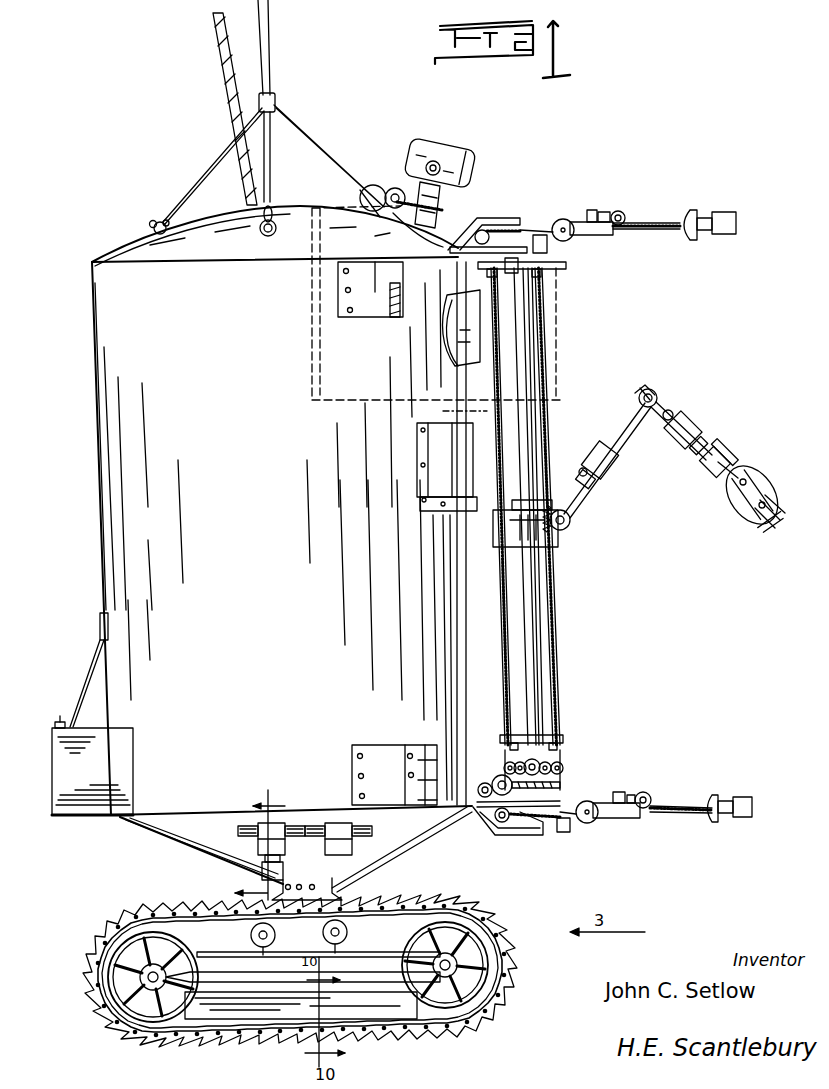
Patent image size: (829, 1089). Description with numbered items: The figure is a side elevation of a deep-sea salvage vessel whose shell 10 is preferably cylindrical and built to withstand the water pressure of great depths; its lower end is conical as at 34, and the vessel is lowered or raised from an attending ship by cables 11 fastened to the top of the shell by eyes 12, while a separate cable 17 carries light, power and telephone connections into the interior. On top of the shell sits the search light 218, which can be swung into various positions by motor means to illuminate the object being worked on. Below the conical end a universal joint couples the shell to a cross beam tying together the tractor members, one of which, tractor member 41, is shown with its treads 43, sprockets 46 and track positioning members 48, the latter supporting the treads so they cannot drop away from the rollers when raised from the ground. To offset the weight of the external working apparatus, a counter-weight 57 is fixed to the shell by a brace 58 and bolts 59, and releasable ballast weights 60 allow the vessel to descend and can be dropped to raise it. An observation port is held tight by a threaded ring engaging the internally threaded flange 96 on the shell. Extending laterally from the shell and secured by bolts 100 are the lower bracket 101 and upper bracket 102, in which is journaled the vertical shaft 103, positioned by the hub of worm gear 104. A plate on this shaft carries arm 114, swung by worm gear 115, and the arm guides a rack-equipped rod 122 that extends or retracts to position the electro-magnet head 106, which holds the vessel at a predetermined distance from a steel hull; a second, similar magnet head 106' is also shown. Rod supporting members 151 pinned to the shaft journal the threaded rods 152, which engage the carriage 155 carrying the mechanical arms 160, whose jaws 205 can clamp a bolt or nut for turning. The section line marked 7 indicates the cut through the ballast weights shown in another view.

The shell 10 is at (197, 537).
The cables 11 is at (272, 128).
The cable 17 is at (213, 78).
The eyes 12 is at (170, 233).
The search light 218 is at (450, 160).
The upper bracket 102 is at (455, 232).
The magnet head 106' is at (646, 209).
The rod supporting members 151 is at (568, 267).
The internally threaded flange 96 is at (470, 315).
The bolts 100 is at (397, 315).
The rods 152 is at (530, 612).
The shaft 103 is at (536, 668).
The carriage 155 is at (561, 548).
The mechanical arms 160 is at (628, 433).
The jaws 205 is at (748, 525).
The brace 58 is at (88, 680).
The bolts 59 is at (62, 722).
The counter-weight 57 is at (107, 768).
The weights 60 is at (266, 843).
The conical lower end 34 is at (422, 833).
The lower bracket 101 is at (476, 812).
The worm gear 104 is at (567, 782).
The worm gear 115 is at (593, 800).
The arm 114 is at (617, 820).
The rod 122 is at (684, 804).
The magnet head 106 is at (747, 793).
The treads 43 is at (474, 1030).
The track positioning members 48 is at (507, 985).
The tractor member 41 is at (385, 1003).
The sprockets 46 is at (212, 958).
The section line 7- 7 is at (251, 835).